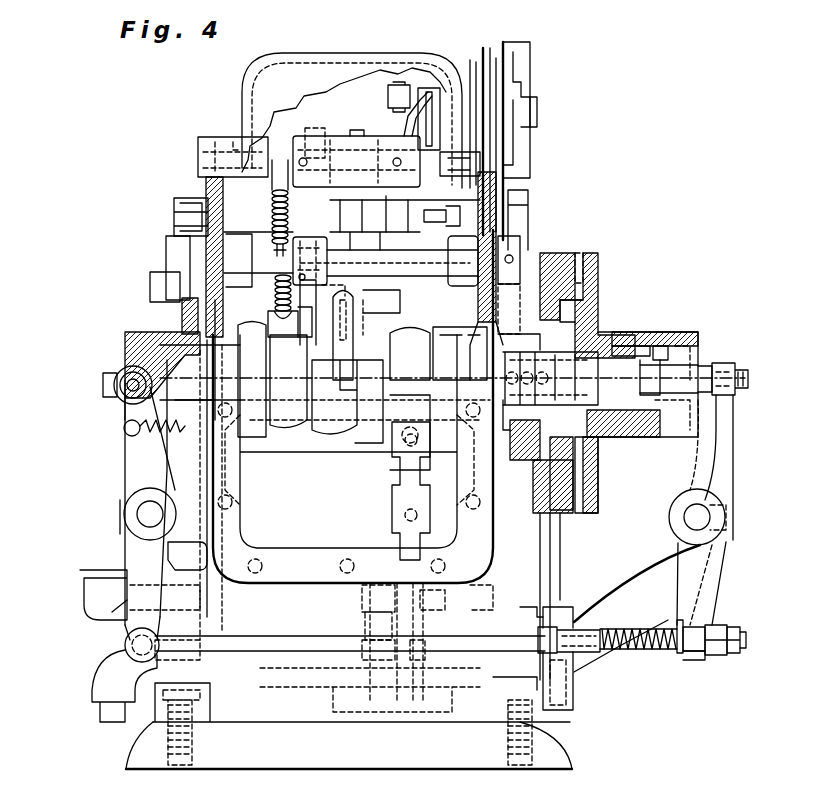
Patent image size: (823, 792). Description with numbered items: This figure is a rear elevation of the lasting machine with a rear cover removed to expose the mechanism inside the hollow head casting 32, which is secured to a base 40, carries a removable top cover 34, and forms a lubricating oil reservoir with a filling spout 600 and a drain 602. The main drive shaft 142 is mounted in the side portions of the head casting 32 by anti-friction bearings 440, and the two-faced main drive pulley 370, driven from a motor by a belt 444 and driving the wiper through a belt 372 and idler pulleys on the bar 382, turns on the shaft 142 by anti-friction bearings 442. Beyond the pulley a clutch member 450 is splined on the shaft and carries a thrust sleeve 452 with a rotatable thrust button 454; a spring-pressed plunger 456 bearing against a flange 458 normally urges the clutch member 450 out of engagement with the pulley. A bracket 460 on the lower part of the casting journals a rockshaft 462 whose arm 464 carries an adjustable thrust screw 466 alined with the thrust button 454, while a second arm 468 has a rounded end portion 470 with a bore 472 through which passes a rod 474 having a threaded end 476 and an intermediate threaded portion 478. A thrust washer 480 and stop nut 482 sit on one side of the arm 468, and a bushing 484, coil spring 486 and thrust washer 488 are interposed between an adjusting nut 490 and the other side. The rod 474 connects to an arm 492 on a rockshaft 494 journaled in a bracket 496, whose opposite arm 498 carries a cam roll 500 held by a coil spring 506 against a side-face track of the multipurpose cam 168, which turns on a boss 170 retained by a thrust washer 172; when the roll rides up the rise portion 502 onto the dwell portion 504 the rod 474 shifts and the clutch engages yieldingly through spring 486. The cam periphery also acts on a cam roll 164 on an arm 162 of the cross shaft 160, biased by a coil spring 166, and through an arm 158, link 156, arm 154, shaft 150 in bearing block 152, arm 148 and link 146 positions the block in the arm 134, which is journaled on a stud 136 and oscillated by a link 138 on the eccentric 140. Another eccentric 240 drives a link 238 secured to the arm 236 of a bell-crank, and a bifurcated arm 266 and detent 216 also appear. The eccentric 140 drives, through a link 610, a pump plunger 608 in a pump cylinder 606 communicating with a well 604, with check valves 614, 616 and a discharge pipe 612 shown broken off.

The top cover 34 is at (334, 55).
The bar 382 is at (508, 46).
The arm 154 is at (318, 136).
The bearing block 152 is at (356, 133).
The arm 148 is at (406, 126).
The link 146 is at (436, 118).
The shaft 150 is at (452, 152).
The link 156 is at (354, 187).
The stud 136 is at (205, 186).
The coil spring 166 is at (274, 204).
The arm 158 is at (322, 237).
The cross shaft 160 is at (446, 270).
The arm 162 is at (168, 260).
The cam roll 164 is at (150, 282).
The belt 372 is at (524, 196).
The belt 444 is at (555, 254).
The clutch member 450 is at (601, 285).
The thrust sleeve 452 is at (652, 333).
The thrust button 454 is at (704, 366).
The adjustable thrust screw 466 is at (744, 371).
The arm 236 is at (372, 284).
The link 138 is at (404, 309).
The spring-pressed detent 216 is at (274, 292).
The bifurcated arm 266 is at (270, 324).
The multipurpose cam 168 is at (130, 334).
The boss 170 is at (126, 352).
The thrust washer 172 is at (118, 381).
The cam roll 500 is at (120, 388).
The arm 134 is at (356, 354).
The eccentric 140 is at (434, 340).
The link 238 is at (372, 341).
The main drive shaft 142 is at (438, 412).
The rise portion 502 is at (148, 412).
The coil spring 506 is at (140, 430).
The dwell portion 504 is at (128, 457).
The arm 498 is at (124, 481).
The rockshaft 494 is at (137, 517).
The arm 492 is at (124, 554).
The bracket 496 is at (187, 558).
The anti-friction bearings 440 is at (240, 455).
The eccentric 240 is at (328, 438).
The link 610 is at (398, 470).
The discharge pipe 612 is at (390, 566).
The check valve 614 is at (362, 646).
The pump plunger 608 is at (420, 602).
The pump cylinder 606 is at (482, 602).
The check valve 616 is at (422, 642).
The head casting 32 is at (495, 590).
The anti-friction bearings 442 is at (514, 452).
The flange 458 is at (578, 469).
The spring-pressed plunger 456 is at (598, 434).
The main drive pulley 370 is at (541, 494).
The bracket 460 is at (621, 586).
The rockshaft 462 is at (712, 509).
The arm 464 is at (730, 442).
The arm 468 is at (722, 568).
The thrust washer 480 is at (714, 626).
The stop nut 482 is at (738, 630).
The threaded end 476 is at (746, 649).
The bore 472 is at (696, 662).
The rounded end portion 470 is at (690, 660).
The thrust washer 488 is at (676, 651).
The coil spring 486 is at (616, 652).
The adjusting nut 490 is at (566, 652).
The bushing 484 is at (569, 626).
The intermediate threaded portion 478 is at (503, 646).
The rod 474 is at (302, 662).
The well 604 is at (338, 704).
The base 40 is at (574, 752).
The filling spout 600 is at (82, 596).
The drain 602 is at (92, 682).